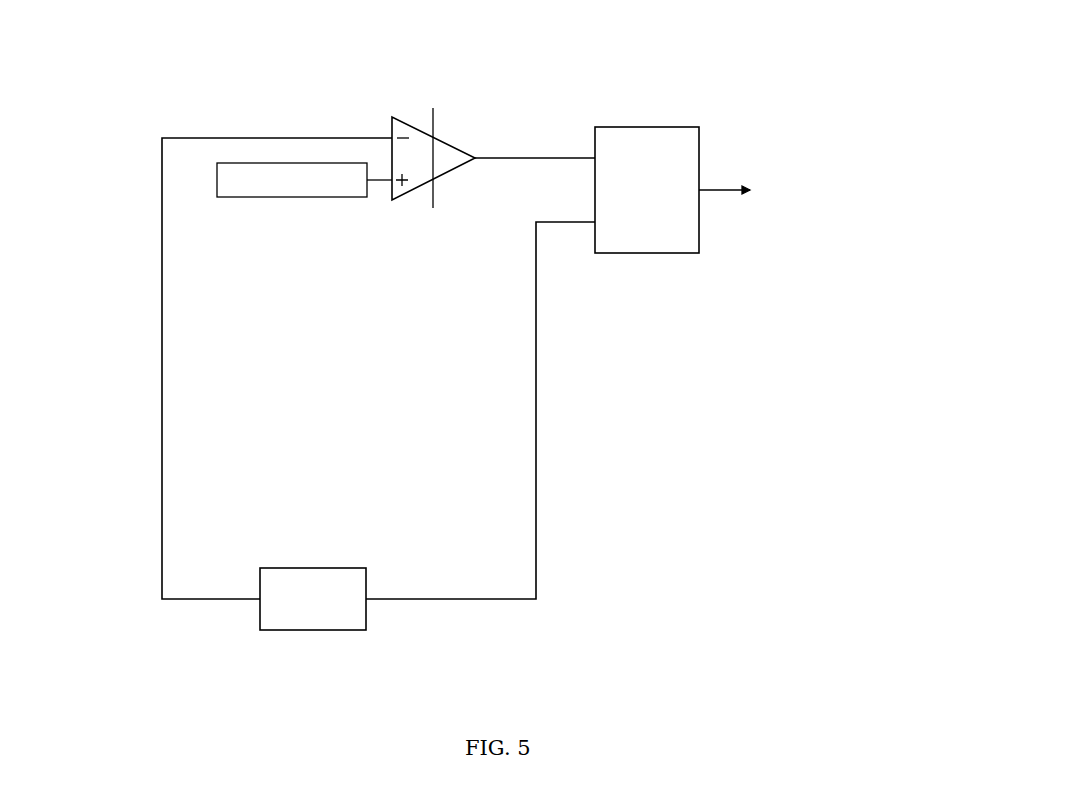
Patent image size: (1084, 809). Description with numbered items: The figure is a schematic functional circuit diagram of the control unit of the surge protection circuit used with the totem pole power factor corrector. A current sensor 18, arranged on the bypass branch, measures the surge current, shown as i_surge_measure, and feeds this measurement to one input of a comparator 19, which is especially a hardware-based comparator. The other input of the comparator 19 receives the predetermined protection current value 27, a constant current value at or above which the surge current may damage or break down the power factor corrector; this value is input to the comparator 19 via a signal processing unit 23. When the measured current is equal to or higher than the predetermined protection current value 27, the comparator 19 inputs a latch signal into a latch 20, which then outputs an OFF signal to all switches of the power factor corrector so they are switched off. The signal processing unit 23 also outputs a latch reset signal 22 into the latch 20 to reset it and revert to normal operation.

The current sensor 18 is at (293, 197).
The comparator 19 is at (463, 150).
The latch 20 is at (645, 127).
The latch reset signal 22 is at (536, 498).
The signal processing unit 23 is at (313, 630).
The predetermined protection current value 27 is at (162, 433).